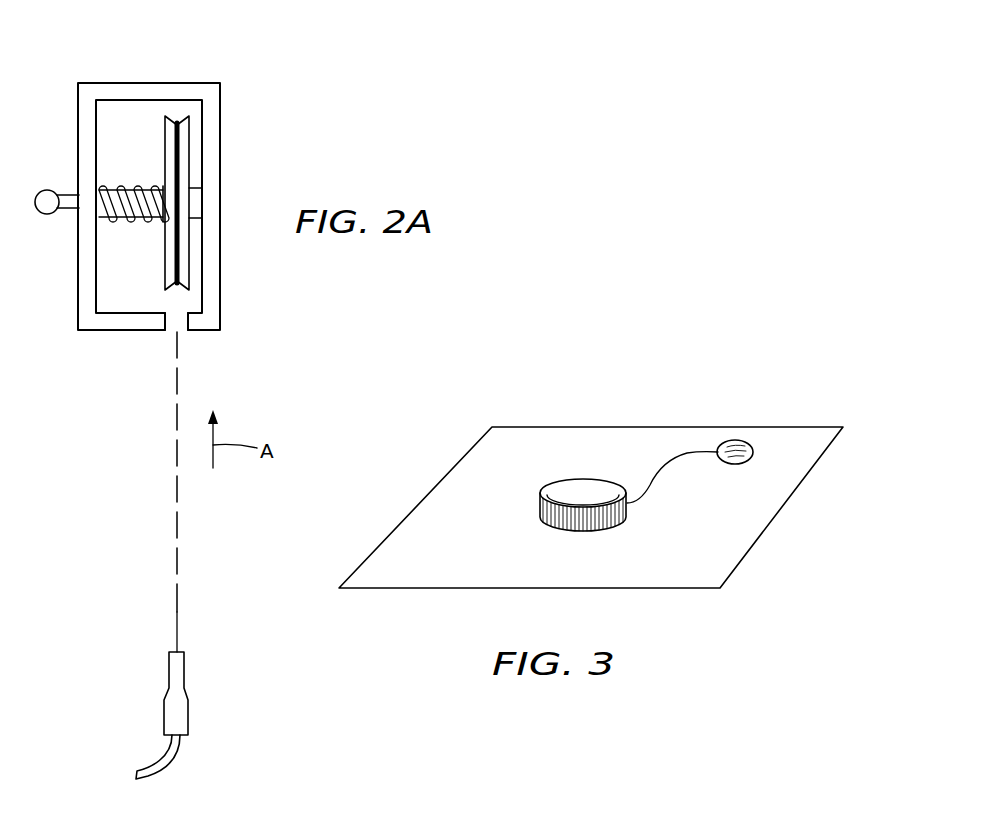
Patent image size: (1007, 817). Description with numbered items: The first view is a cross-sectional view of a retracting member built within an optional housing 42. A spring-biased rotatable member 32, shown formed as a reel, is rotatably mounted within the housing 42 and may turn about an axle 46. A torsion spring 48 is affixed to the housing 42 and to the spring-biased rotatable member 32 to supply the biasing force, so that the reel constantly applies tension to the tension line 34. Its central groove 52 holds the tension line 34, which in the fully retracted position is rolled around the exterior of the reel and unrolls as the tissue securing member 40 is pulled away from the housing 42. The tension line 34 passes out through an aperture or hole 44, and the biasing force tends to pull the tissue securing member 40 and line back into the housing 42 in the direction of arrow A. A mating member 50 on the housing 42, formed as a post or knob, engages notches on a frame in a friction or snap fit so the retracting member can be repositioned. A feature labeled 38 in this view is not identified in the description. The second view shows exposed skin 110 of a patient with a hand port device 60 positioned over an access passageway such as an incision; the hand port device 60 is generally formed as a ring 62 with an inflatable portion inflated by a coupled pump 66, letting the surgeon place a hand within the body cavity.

In FIG. 2A, the spring-biased rotatable member 32 is at (164, 128).
In FIG. 2A, the tension line 34 is at (178, 530).
In FIG. 2A, the suture tail 38 is at (175, 631).
In FIG. 2A, the tissue securing member 40 is at (190, 717).
In FIG. 2A, the housing 42 is at (222, 103).
In FIG. 2A, the aperture 44 is at (182, 328).
In FIG. 2A, the axle 46 is at (137, 224).
In FIG. 2A, the torsion spring 48 is at (122, 184).
In FIG. 2A, the mating member 50 is at (66, 215).
In FIG. 2A, the central groove 52 is at (175, 123).
In FIG. 3, the hand port device 60 is at (532, 504).
In FIG. 3, the ring 62 is at (563, 514).
In FIG. 3, the pump 66 is at (731, 440).
In FIG. 3, the exposed skin 110 is at (438, 567).